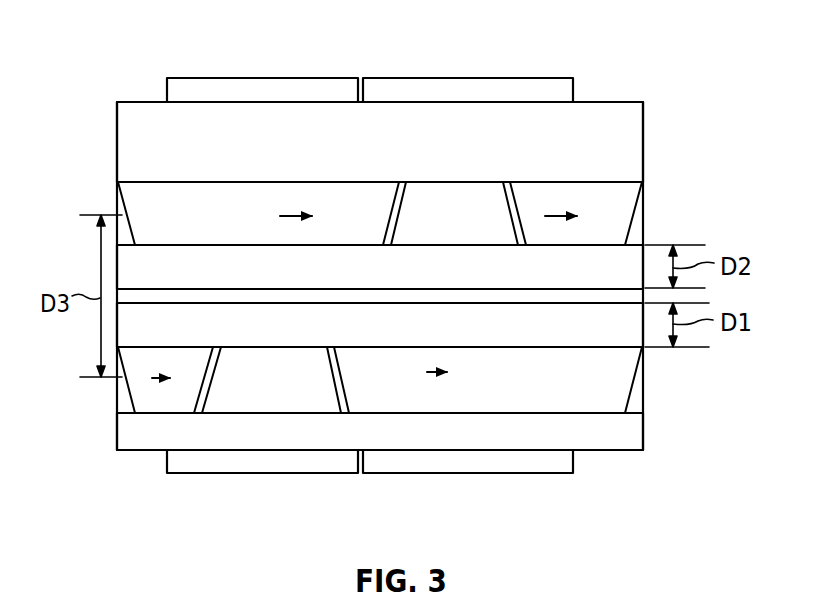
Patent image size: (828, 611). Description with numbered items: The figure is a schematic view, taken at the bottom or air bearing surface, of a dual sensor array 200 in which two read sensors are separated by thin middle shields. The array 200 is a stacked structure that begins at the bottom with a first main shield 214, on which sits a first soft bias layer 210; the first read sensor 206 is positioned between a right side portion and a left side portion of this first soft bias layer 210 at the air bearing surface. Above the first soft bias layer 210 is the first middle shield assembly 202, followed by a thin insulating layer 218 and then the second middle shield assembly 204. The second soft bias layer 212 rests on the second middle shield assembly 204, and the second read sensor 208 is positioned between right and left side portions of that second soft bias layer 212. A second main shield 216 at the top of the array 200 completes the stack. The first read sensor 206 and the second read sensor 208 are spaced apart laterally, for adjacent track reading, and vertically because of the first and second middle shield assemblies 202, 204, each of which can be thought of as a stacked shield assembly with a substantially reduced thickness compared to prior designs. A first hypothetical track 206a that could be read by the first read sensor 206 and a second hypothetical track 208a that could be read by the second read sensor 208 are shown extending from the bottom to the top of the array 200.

The dual sensor array 200 is at (652, 68).
The first middle shield assembly 202 is at (467, 337).
The second middle shield assembly 204 is at (491, 276).
The first read sensor 206 is at (295, 406).
The first hypothetical track 206a is at (258, 78).
The second read sensor 208 is at (477, 240).
The second hypothetical track 208a is at (477, 78).
The first soft bias layer 210 is at (557, 392).
The second soft bias layer 212 is at (210, 228).
The first main shield 214 is at (473, 442).
The second main shield 216 is at (487, 144).
The thin insulating layer 218 is at (615, 288).